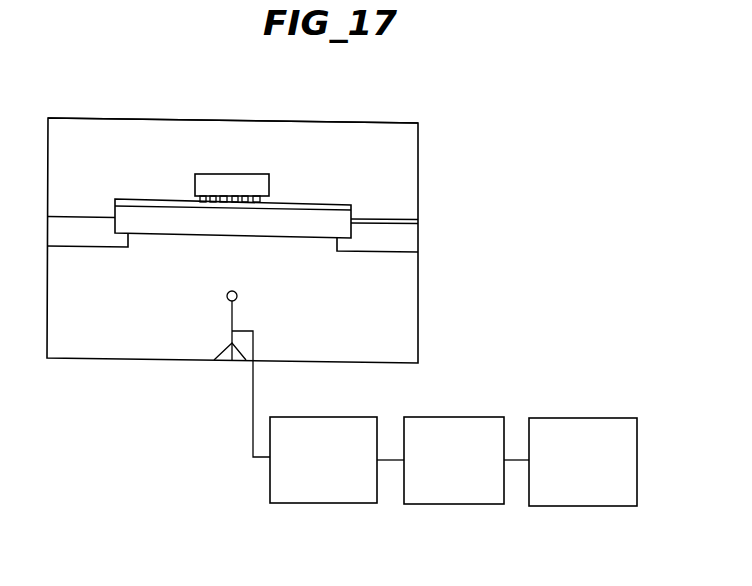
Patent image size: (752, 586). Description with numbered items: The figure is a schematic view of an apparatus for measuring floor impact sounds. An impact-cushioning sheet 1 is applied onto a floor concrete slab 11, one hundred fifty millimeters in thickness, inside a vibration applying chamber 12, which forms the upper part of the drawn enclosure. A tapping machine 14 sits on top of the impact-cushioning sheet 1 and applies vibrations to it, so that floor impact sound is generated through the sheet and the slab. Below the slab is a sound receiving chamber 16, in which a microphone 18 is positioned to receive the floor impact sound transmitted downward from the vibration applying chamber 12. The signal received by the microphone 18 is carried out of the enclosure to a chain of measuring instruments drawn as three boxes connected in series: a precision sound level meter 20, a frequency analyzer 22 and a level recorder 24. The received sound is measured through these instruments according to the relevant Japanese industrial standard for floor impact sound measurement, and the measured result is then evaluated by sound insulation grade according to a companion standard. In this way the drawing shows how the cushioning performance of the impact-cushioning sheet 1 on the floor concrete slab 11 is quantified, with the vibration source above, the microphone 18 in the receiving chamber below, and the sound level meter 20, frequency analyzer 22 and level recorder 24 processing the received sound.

The impact-cushioning sheet 1 is at (351, 206).
The floor concrete slab 11 is at (349, 238).
The vibration applying chamber 12 is at (403, 140).
The tapping machine 14 is at (269, 181).
The sound receiving chamber 16 is at (402, 283).
The microphone 18 is at (232, 301).
The precision sound level meter 20 is at (326, 503).
The frequency analyzer 22 is at (456, 504).
The level recorder 24 is at (589, 506).